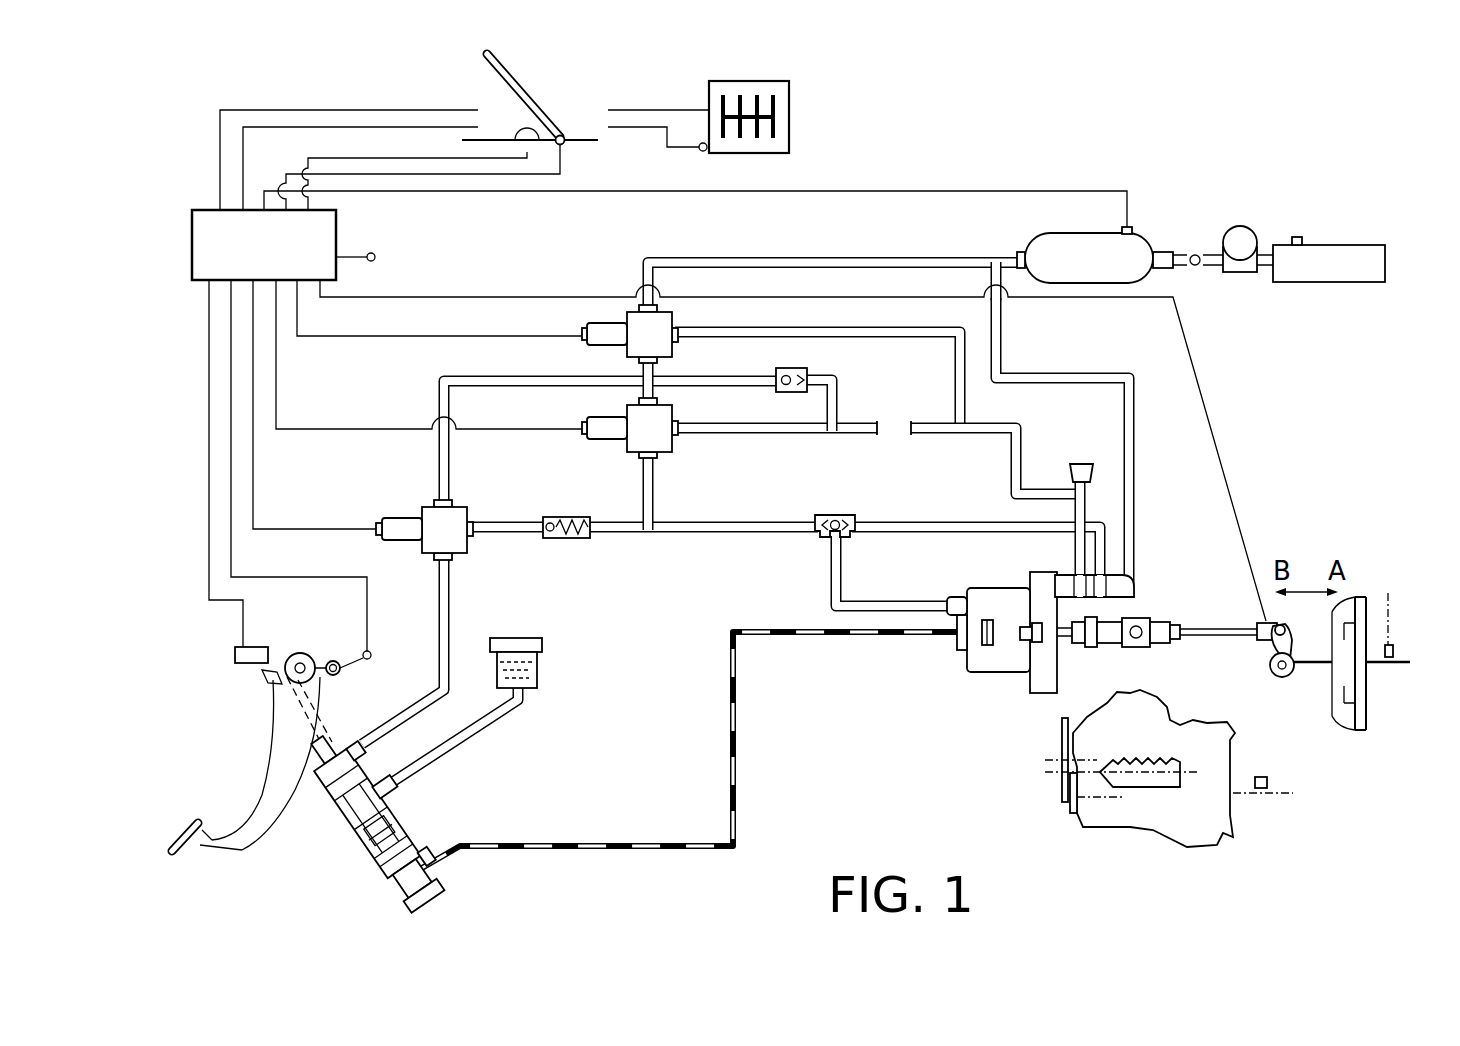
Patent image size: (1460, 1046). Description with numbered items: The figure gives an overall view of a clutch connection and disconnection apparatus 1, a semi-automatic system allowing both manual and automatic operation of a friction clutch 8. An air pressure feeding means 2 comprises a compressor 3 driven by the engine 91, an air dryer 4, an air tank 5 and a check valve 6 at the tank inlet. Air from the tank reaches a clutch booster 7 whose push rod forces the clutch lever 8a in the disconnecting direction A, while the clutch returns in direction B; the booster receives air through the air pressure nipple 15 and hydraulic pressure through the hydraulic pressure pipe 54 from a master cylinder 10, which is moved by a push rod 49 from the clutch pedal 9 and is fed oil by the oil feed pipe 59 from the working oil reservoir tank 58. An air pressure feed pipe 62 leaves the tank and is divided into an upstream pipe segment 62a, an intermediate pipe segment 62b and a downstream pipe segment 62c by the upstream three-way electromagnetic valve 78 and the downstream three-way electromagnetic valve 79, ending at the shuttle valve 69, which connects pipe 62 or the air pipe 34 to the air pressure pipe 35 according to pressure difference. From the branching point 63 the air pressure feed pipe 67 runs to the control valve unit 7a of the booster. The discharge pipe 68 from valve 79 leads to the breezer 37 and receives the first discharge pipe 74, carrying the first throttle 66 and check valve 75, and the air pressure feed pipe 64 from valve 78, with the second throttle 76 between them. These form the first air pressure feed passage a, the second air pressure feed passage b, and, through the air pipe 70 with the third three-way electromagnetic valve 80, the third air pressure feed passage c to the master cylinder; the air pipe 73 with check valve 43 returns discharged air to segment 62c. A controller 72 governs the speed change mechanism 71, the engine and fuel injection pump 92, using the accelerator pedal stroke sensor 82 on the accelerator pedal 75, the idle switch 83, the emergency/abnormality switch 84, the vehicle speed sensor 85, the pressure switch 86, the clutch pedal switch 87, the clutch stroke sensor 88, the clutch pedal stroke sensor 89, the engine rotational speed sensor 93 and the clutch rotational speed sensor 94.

The clutch connection and disconnection apparatus 1 is at (1035, 173).
The air pressure feeding means 2 is at (1228, 158).
The compressor 3 is at (1338, 256).
The air dryer 4 is at (1240, 238).
The air tank 5 is at (1082, 250).
The check valve 6 is at (1192, 272).
The clutch booster 7 is at (995, 682).
The control valve unit 7a is at (1125, 596).
The friction clutch 8 is at (1343, 730).
The clutch lever 8a is at (1270, 648).
The clutch pedal 9 is at (213, 845).
The master cylinder 10 is at (348, 853).
The air pressure nipple 15 is at (950, 598).
The air pipe 34 is at (970, 522).
The air pressure pipe 35 is at (878, 600).
The breezer 37 is at (1083, 462).
The check valve 43 is at (570, 540).
The push rod 49 is at (302, 715).
The hydraulic pressure pipe 54 is at (737, 790).
The working oil reservoir tank 58 is at (537, 677).
The oil feed pipe 59 is at (450, 750).
The air pressure feed pipe 62 is at (838, 222).
The upstream pipe segment 62a is at (752, 258).
The intermediate pipe segment 62b is at (640, 398).
The downstream pipe segment 62c is at (642, 498).
The branching point 63 is at (993, 257).
The air pressure feed pipe 64 is at (900, 333).
The first throttle 66 is at (715, 388).
The air pressure feed pipe 67 is at (1134, 470).
The second air pressure discharge pipe 68 is at (778, 430).
The shuttle valve 69 is at (822, 538).
The air pipe 70 is at (437, 381).
The speed change mechanism 71 is at (793, 117).
The controller 72 is at (281, 257).
The air pipe 73 is at (522, 524).
The first air pressure discharge pipe 74 is at (833, 398).
The check valve 75 is at (781, 370).
The second throttle 76 is at (893, 430).
The upstream three-way electromagnetic valve 78 is at (636, 345).
The downstream three-way electromagnetic valve 79 is at (636, 442).
The third three-way electromagnetic valve 80 is at (423, 510).
The accelerator pedal stroke sensor 82 is at (562, 133).
The idle switch 83 is at (510, 136).
The emergency/abnormality switch 84 is at (700, 152).
The vehicle speed sensor 85 is at (375, 257).
The pressure switch 86 is at (1133, 230).
The clutch pedal switch 87 is at (253, 645).
The clutch stroke sensor 88 is at (1258, 622).
The clutch pedal stroke sensor 89 is at (348, 674).
The engine 91 is at (1117, 712).
The fuel injection pump 92 is at (1153, 782).
The engine rotational speed sensor 93 is at (1260, 775).
The clutch rotational speed sensor 94 is at (1395, 650).
The first air pressure feed passage a is at (658, 488).
The second air pressure feed passage b is at (1133, 430).
The third air pressure feed passage c is at (437, 403).